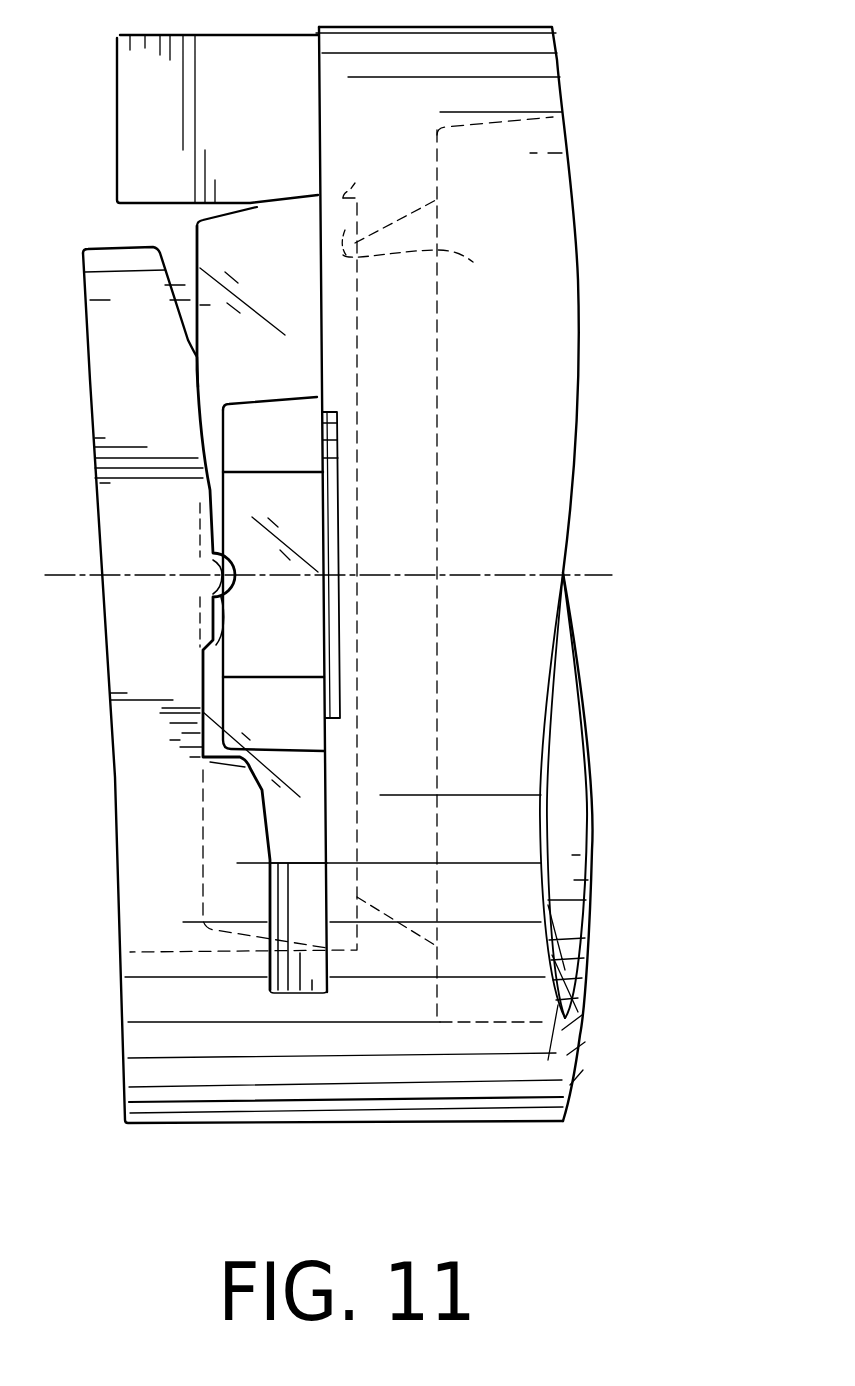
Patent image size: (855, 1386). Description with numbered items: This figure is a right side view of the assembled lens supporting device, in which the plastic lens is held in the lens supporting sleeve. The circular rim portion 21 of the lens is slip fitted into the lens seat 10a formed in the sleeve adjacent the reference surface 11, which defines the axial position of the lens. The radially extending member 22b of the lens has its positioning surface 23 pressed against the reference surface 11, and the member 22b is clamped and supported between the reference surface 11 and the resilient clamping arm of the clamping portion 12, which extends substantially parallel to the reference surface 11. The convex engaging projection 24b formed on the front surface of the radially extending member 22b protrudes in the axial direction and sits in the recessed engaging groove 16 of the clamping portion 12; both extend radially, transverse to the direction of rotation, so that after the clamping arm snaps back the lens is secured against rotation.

The lens seat 10a is at (328, 575).
The reference surface 11 is at (320, 345).
The resilient clamping portion 12 is at (114, 366).
The recessed engaging groove 16 is at (199, 573).
The circular rim portion 21 is at (355, 183).
The radially extending member 22b is at (315, 524).
The positioning surface 23 is at (327, 650).
The convex engaging projection 24b is at (215, 592).